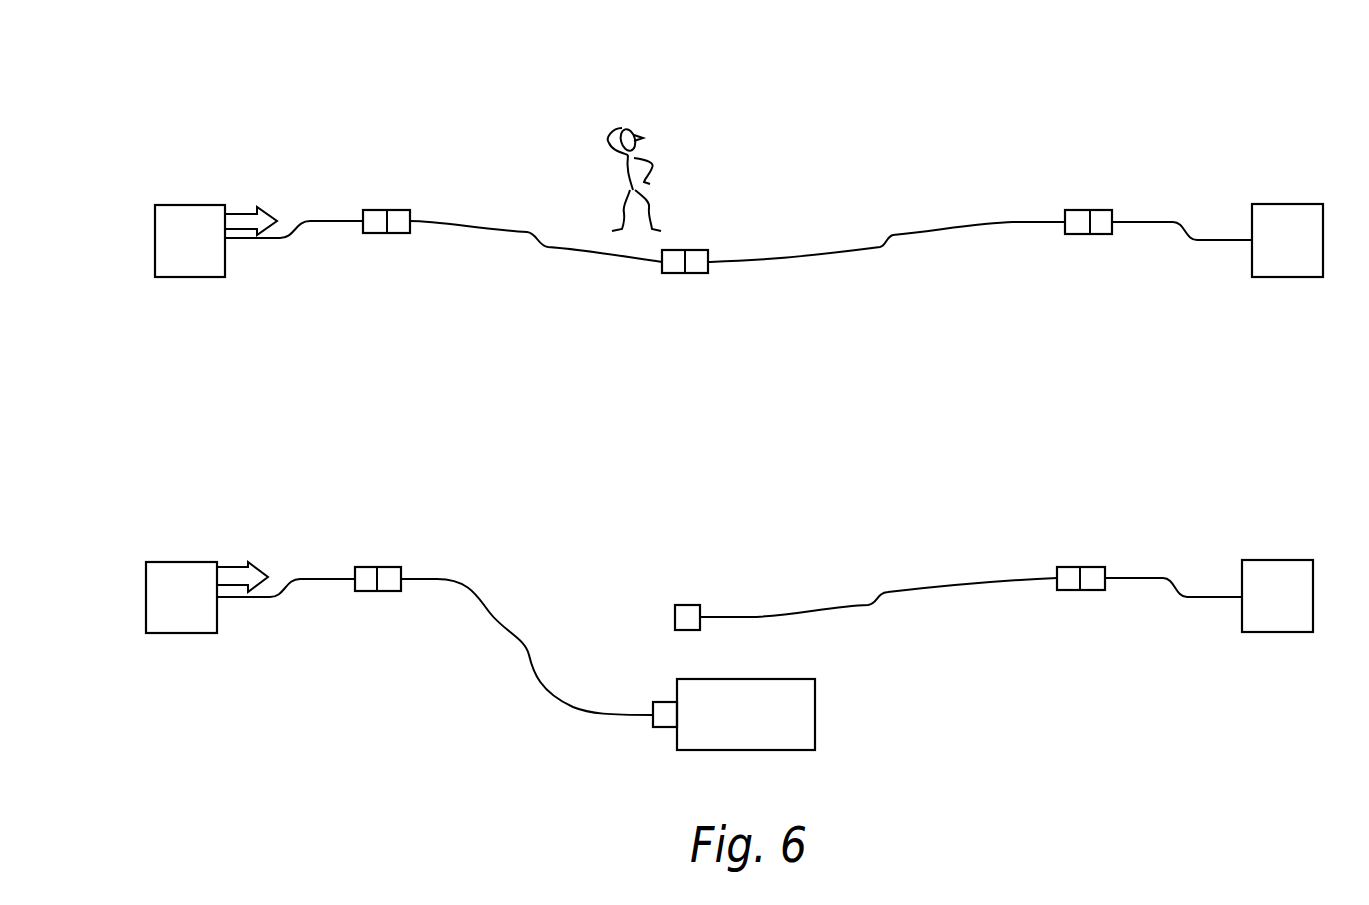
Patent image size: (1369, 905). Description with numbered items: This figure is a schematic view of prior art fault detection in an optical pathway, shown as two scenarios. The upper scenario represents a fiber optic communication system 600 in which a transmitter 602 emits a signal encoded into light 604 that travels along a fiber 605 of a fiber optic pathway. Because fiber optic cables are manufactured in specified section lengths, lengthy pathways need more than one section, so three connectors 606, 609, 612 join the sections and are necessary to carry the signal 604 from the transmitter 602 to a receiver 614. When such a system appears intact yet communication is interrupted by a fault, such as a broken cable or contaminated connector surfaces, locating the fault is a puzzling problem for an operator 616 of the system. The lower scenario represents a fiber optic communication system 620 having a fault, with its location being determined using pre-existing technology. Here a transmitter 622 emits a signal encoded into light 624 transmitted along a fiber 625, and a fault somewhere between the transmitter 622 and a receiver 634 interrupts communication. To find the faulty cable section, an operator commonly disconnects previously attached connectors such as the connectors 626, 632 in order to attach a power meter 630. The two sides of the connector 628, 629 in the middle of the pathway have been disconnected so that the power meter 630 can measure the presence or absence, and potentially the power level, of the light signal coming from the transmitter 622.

The fiber optic communication system 600 is at (256, 82).
The transmitter 602 is at (190, 205).
The light 604 is at (242, 213).
The fiber 605 is at (333, 221).
The connector 606 is at (392, 190).
The connector 609 is at (700, 232).
The connector 612 is at (1106, 192).
The receiver 614 is at (1288, 204).
The operator 616 is at (674, 92).
The fiber optic communication system 620 is at (248, 437).
The transmitter 622 is at (183, 562).
The light 624 is at (232, 567).
The fiber 625 is at (328, 579).
The connector 626 is at (388, 548).
The connector side 628 is at (662, 702).
The connector side 629 is at (690, 605).
The power meter 630 is at (745, 679).
The connector 632 is at (1090, 546).
The receiver 634 is at (1278, 560).